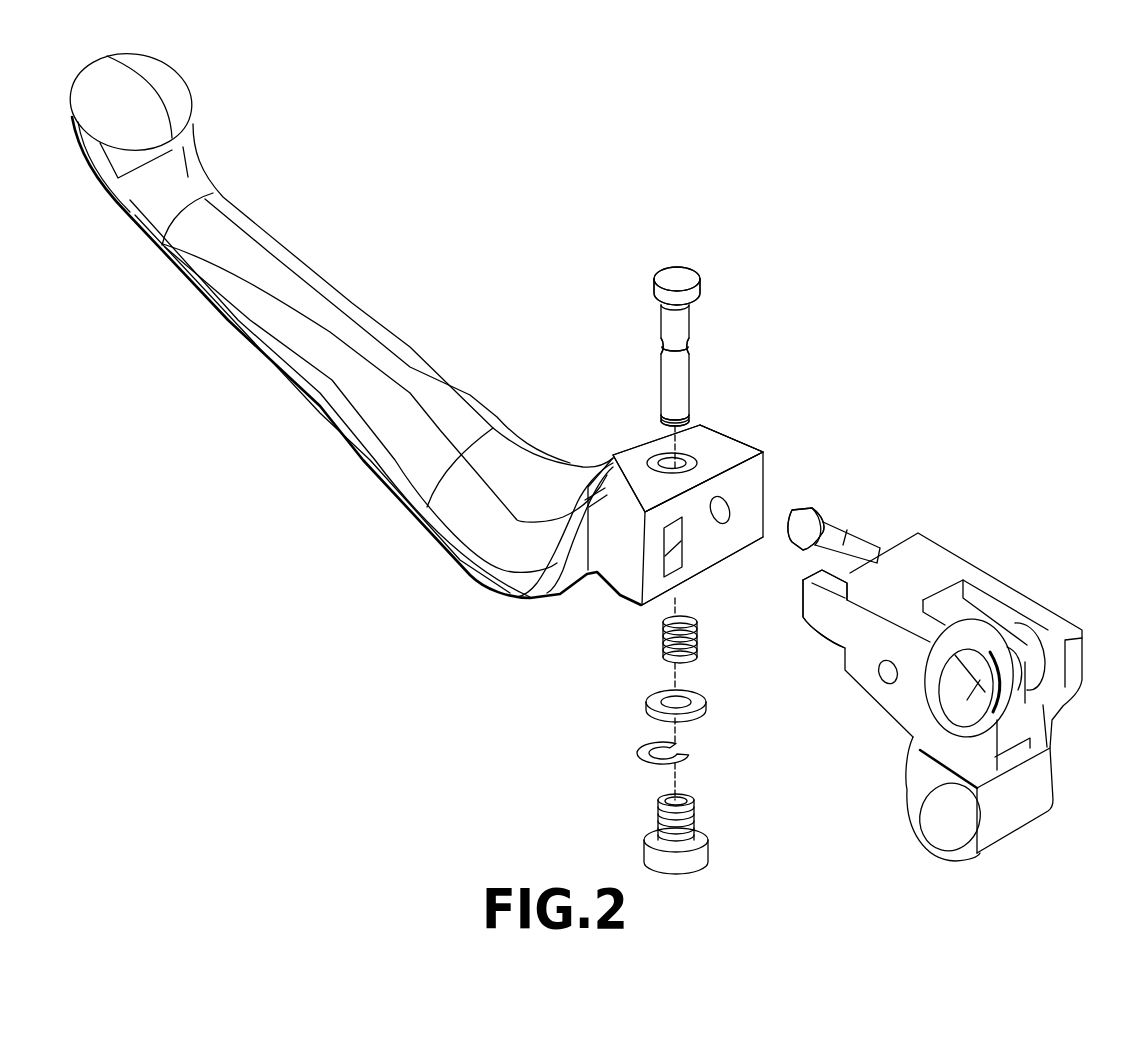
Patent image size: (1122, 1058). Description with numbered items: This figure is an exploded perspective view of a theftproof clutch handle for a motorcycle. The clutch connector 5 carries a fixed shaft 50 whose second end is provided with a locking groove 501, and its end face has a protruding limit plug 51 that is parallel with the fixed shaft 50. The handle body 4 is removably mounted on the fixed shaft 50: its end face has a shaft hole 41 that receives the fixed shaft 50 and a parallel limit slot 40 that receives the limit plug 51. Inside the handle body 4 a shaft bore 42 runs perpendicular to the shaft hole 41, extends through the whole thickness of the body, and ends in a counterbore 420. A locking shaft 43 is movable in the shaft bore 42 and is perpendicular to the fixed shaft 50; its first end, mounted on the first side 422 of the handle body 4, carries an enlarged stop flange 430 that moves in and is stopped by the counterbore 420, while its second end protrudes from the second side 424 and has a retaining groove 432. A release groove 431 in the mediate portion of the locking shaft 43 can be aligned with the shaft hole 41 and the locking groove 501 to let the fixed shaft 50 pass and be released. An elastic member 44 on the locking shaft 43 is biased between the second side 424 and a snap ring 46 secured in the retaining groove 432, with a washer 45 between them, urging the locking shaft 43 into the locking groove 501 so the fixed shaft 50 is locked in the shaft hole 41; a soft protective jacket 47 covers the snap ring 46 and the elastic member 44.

The handle body 4 is at (365, 322).
The limit slot 40 is at (635, 600).
The shaft hole 41 is at (720, 508).
The shaft bore 42 is at (518, 598).
The counterbore 420 is at (727, 433).
The first side 422 is at (745, 447).
The second side 424 is at (657, 610).
The locking shaft 43 is at (650, 371).
The enlarged stop flange 430 is at (678, 278).
The release groove 431 is at (677, 352).
The retaining groove 432 is at (663, 422).
The elastic member 44 is at (663, 648).
The washer 45 is at (697, 702).
The snap ring 46 is at (655, 763).
The soft protective jacket 47 is at (695, 848).
The clutch connector 5 is at (1023, 605).
The fixed shaft 50 is at (858, 537).
The locking groove 501 is at (823, 525).
The limit plug 51 is at (823, 620).